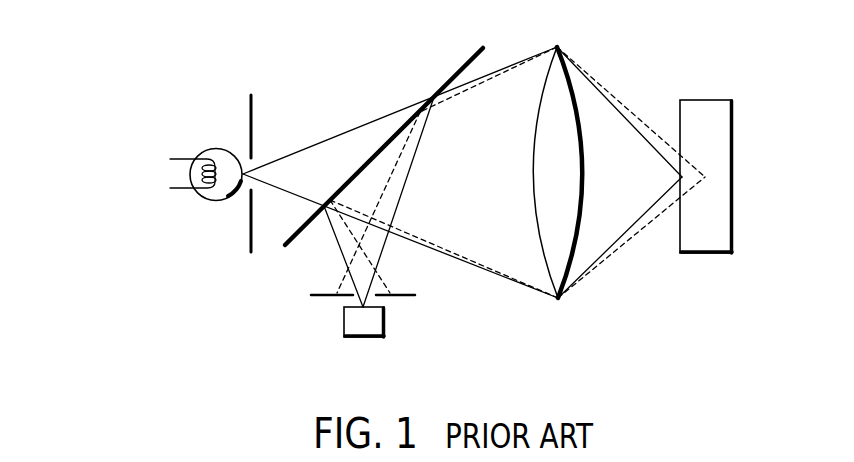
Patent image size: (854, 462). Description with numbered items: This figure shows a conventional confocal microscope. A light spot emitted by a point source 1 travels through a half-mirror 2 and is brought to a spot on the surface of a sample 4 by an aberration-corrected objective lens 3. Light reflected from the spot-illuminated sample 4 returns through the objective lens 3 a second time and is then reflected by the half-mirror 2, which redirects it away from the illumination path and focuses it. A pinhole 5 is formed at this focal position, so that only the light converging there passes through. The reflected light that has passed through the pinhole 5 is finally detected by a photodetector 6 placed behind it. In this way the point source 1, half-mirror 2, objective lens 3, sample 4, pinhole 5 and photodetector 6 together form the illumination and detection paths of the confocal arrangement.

The point source 1 is at (216, 148).
The half-mirror 2 is at (483, 47).
The objective lens 3 is at (558, 299).
The sample 4 is at (708, 254).
The pinhole 5 is at (325, 297).
The photodetector 6 is at (368, 338).